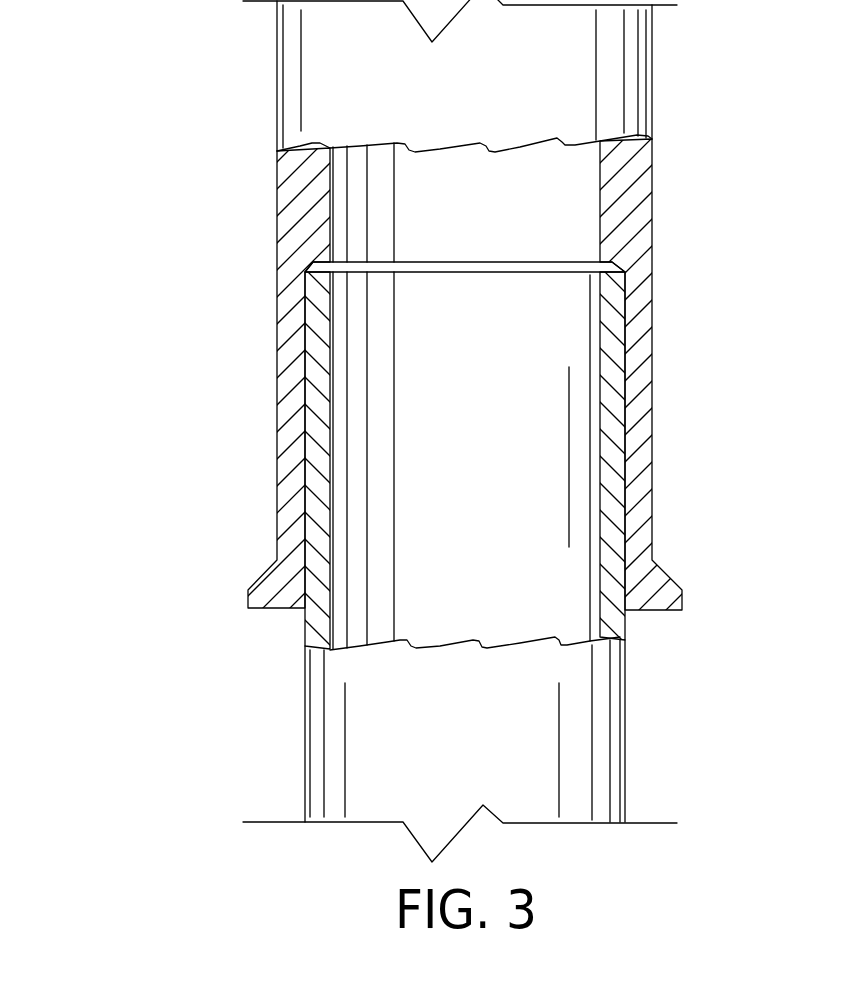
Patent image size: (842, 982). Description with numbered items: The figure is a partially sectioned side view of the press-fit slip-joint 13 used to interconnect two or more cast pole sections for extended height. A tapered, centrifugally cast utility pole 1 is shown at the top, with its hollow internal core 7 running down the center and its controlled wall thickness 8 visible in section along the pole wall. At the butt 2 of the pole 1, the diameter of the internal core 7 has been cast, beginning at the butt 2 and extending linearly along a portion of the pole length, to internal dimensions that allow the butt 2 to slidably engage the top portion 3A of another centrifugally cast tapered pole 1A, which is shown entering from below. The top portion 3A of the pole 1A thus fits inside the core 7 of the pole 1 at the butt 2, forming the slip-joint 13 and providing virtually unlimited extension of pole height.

The pole 1 is at (455, 90).
The another centrifugally cast tapered pole 1A is at (480, 744).
The pole butt 2 is at (497, 491).
The top portion 3A is at (315, 330).
The internal core 7 is at (455, 219).
The wall thickness 8 is at (632, 207).
The slip-joint 13 is at (404, 491).